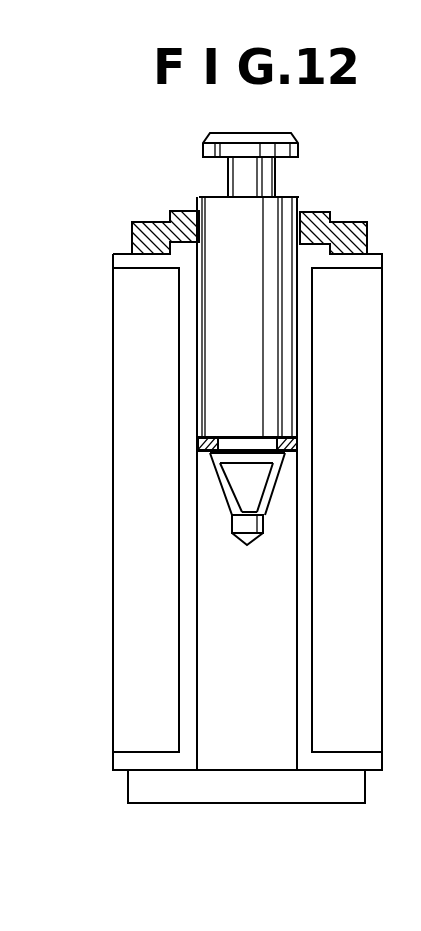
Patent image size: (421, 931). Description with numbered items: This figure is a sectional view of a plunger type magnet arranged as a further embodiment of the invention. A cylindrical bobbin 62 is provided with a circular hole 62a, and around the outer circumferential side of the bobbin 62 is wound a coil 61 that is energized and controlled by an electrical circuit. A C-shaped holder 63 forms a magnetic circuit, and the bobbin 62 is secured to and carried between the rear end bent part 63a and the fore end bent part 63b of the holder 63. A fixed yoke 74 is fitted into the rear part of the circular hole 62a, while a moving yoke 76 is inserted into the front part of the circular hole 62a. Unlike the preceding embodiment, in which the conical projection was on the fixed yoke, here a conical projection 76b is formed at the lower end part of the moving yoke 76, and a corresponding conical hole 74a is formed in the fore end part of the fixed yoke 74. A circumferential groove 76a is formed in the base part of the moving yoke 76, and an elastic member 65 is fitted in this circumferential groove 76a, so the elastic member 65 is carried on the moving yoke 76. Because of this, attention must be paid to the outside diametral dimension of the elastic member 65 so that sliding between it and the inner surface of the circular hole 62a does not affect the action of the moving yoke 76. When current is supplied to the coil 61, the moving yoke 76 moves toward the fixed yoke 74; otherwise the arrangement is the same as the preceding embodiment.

The coil 61 is at (137, 325).
The cylindrical bobbin 62 is at (188, 593).
The circular hole 62a is at (193, 709).
The C-shaped holder 63 is at (218, 792).
The rear end bent part 63a is at (332, 792).
The fore end bent part 63b is at (352, 229).
The elastic member 65 is at (207, 434).
The fixed yoke 74 is at (232, 648).
The conical hole 74a is at (222, 507).
The moving yoke 76 is at (228, 365).
The circumferential groove 76a is at (237, 437).
The conical projection 76b is at (240, 483).